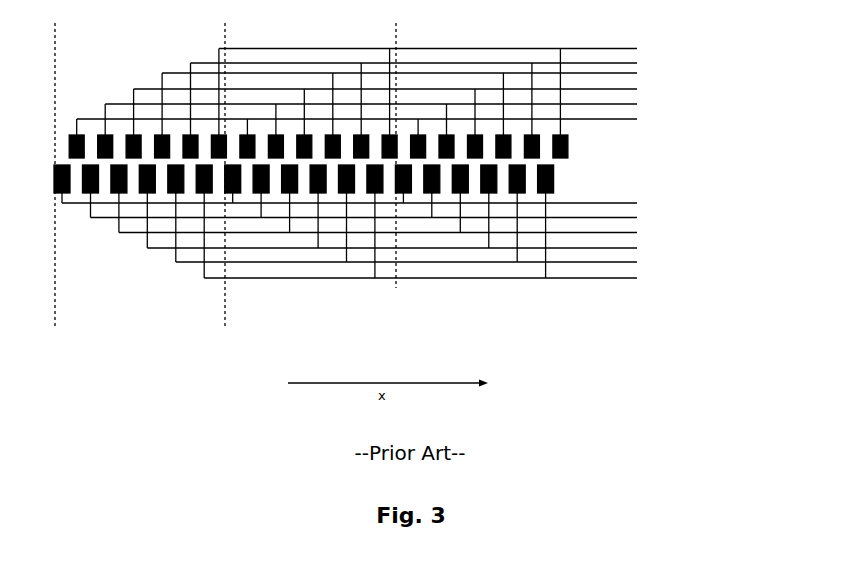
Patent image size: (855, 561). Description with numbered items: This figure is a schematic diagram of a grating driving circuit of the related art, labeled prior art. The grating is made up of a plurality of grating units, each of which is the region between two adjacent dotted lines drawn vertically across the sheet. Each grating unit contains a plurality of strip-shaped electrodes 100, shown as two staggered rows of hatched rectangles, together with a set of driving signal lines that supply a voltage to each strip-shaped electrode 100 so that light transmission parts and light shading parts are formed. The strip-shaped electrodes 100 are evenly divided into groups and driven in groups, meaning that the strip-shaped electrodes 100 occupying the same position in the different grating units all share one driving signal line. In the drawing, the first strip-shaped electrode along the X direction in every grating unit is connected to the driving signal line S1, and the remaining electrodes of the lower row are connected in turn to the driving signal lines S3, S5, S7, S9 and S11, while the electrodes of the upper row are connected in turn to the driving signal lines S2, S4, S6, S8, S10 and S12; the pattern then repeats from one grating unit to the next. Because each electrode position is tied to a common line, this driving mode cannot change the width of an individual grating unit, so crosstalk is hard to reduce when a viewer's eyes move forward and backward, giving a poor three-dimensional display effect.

The strip-shaped electrode 100 is at (568, 148).
The driving signal line S1 is at (364, 202).
The driving signal line S2 is at (369, 119).
The driving signal line S3 is at (378, 217).
The driving signal line S4 is at (383, 104).
The driving signal line S5 is at (392, 232).
The driving signal line S6 is at (397, 89).
The driving signal line S7 is at (406, 247).
The driving signal line S8 is at (411, 73).
The driving signal line S9 is at (421, 261).
The driving signal line S10 is at (429, 62).
The driving signal line S11 is at (438, 277).
The driving signal line S12 is at (443, 48).